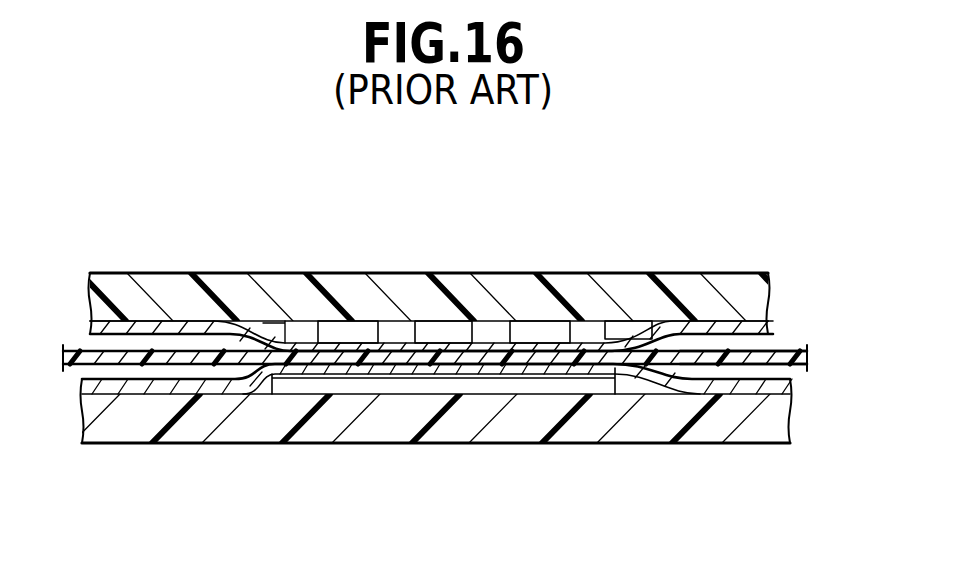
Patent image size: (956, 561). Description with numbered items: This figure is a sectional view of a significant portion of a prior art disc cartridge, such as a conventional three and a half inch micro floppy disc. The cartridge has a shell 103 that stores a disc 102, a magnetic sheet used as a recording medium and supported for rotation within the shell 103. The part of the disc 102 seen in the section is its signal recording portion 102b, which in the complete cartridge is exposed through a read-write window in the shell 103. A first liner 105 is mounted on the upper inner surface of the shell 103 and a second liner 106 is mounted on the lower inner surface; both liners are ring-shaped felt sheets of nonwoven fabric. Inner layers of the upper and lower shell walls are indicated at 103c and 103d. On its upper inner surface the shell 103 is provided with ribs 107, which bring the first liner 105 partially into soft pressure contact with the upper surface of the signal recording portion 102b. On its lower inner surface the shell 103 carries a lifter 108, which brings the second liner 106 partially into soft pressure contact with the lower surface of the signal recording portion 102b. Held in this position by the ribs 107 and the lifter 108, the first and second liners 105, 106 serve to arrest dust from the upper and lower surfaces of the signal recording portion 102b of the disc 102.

The disc 102 is at (792, 346).
The signal recording portion 102b is at (680, 357).
The shell 103 is at (133, 273).
The upper thin layer of plate 103c is at (264, 322).
The lower thin layer of plate 103d is at (256, 400).
The first liner 105 is at (637, 335).
The second liner 106 is at (639, 392).
The ribs 107 is at (590, 330).
The lifter 108 is at (390, 392).